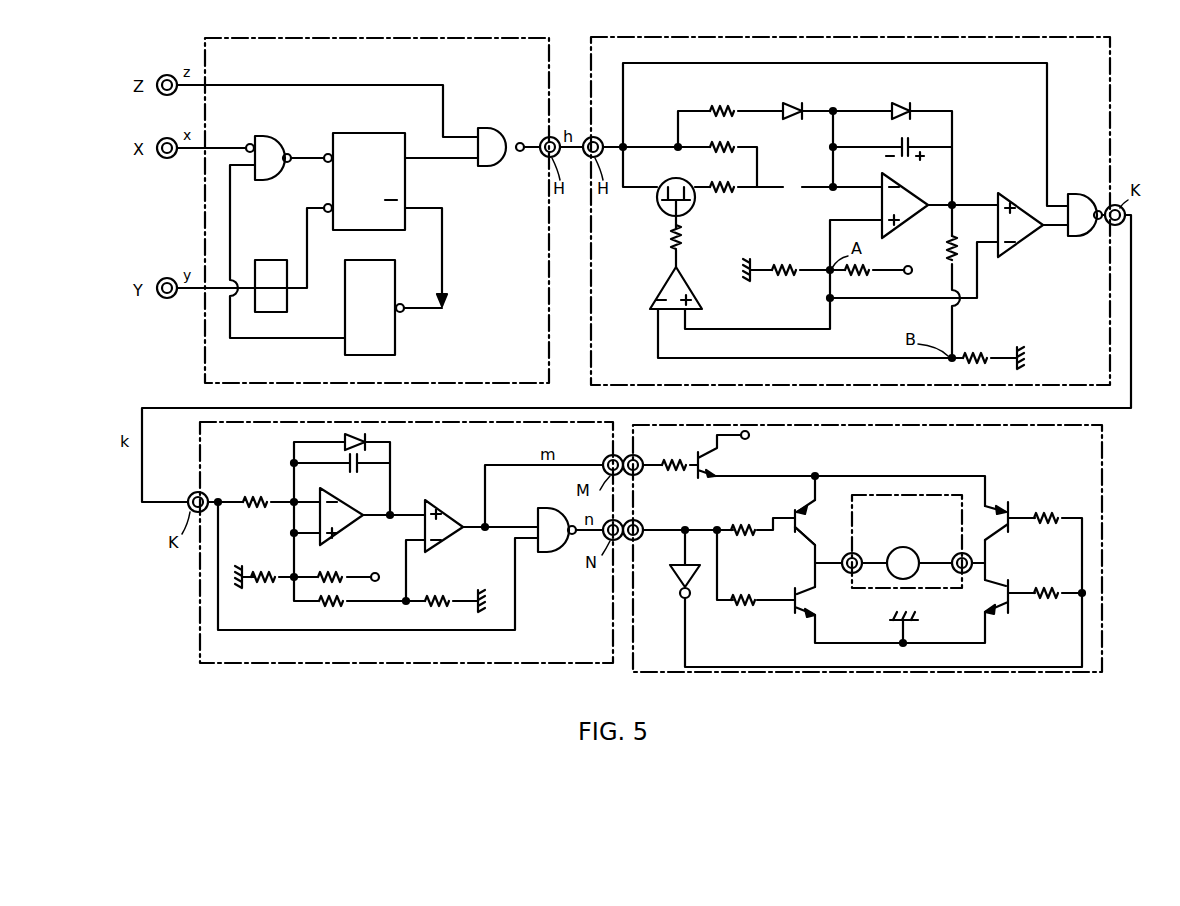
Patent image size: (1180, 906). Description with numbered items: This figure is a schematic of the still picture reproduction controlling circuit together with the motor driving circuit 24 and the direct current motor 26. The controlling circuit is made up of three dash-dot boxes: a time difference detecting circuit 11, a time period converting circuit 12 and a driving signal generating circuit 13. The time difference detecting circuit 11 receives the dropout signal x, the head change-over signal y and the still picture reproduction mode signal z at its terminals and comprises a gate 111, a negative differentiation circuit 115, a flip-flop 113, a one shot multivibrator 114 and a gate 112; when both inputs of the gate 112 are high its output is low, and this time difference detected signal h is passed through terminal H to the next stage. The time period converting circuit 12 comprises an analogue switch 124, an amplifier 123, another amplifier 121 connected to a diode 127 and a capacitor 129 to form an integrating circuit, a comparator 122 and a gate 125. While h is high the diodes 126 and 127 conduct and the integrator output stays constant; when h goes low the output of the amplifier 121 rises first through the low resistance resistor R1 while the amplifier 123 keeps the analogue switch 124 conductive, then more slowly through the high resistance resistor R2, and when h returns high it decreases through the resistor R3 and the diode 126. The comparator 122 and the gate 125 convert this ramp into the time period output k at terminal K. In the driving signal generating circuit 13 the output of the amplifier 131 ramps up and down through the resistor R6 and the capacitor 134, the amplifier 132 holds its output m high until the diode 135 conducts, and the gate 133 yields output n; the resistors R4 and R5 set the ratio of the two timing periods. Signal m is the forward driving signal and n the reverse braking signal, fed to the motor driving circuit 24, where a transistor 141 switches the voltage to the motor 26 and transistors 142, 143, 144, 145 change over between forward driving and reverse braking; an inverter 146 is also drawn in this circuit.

The time difference detecting circuit 11 is at (493, 38).
The time period converting circuit 12 is at (988, 37).
The driving signal generating circuit 13 is at (305, 665).
The motor driving circuit 24 is at (1102, 620).
The direct current motor 26 is at (905, 547).
The gate 111 is at (270, 136).
The gate 112 is at (495, 128).
The flip-flop 113 is at (373, 133).
The one shot multivibrator 114 is at (396, 342).
The negative differentiation circuit 115 is at (288, 305).
The amplifier 121 is at (904, 194).
The comparator 122 is at (1021, 242).
The amplifier 123 is at (655, 294).
The analogue switch 124 is at (695, 210).
The gate 125 is at (1078, 194).
The diode 126 is at (800, 107).
The diode 127 is at (906, 110).
The capacitor 129 is at (906, 145).
The amplifier 131 is at (347, 531).
The amplifier 132 is at (446, 507).
The gate 133 is at (548, 553).
The capacitor 134 is at (357, 468).
The diode 135 is at (368, 440).
The transistor 141 is at (716, 461).
The transistor 142 is at (790, 537).
The transistor 143 is at (1012, 612).
The transistor 144 is at (790, 615).
The transistor 145 is at (1012, 538).
The inverter 146 is at (663, 583).
The resistor R1 is at (724, 176).
The resistor R2 is at (724, 136).
The resistor R3 is at (722, 99).
The resistor R4 is at (265, 573).
The resistor R5 is at (337, 594).
The resistor R6 is at (254, 500).